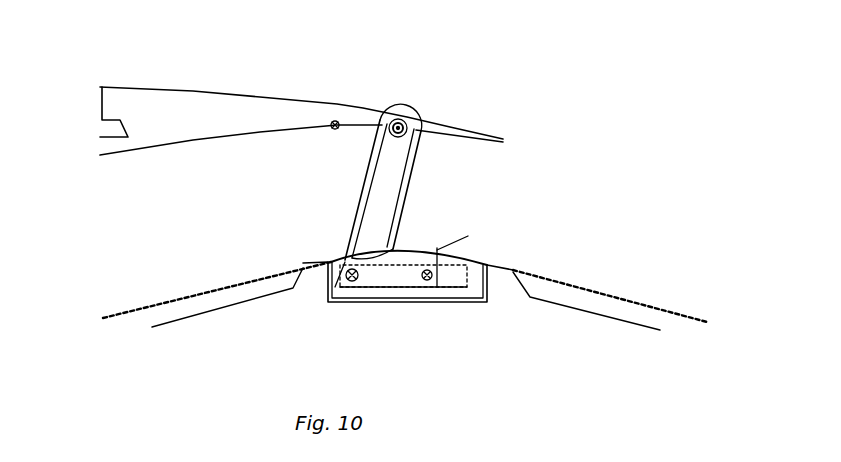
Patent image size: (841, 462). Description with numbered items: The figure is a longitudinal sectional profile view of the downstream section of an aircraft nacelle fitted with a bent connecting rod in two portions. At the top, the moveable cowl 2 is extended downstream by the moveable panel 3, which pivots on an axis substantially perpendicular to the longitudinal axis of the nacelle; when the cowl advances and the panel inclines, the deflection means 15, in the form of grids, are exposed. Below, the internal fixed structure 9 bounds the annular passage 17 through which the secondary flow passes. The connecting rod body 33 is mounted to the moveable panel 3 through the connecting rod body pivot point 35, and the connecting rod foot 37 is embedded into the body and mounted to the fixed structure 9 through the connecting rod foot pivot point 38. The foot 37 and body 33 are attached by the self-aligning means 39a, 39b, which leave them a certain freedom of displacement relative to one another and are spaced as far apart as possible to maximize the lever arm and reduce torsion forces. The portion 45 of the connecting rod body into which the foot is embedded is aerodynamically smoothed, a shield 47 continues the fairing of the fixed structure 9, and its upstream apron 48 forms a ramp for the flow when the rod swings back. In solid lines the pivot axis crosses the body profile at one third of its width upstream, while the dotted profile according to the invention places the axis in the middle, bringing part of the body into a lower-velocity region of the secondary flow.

The moveable cowl 2 is at (245, 93).
The moveable panel 3 is at (363, 108).
The internal fixed structure 9 is at (223, 297).
The deflection means 15 is at (102, 87).
The annular passage 17 is at (125, 277).
The connecting rod body 33 is at (372, 160).
The connecting rod body pivot point 35 is at (407, 118).
The connecting rod foot 37 is at (440, 251).
The connecting rod foot pivot point 38 is at (463, 288).
The self-aligning means 39a is at (351, 281).
The self-aligning means 39b is at (427, 281).
The portion of the connecting rod body 45 is at (402, 258).
The shield 47 is at (437, 250).
The apron 48 is at (337, 262).